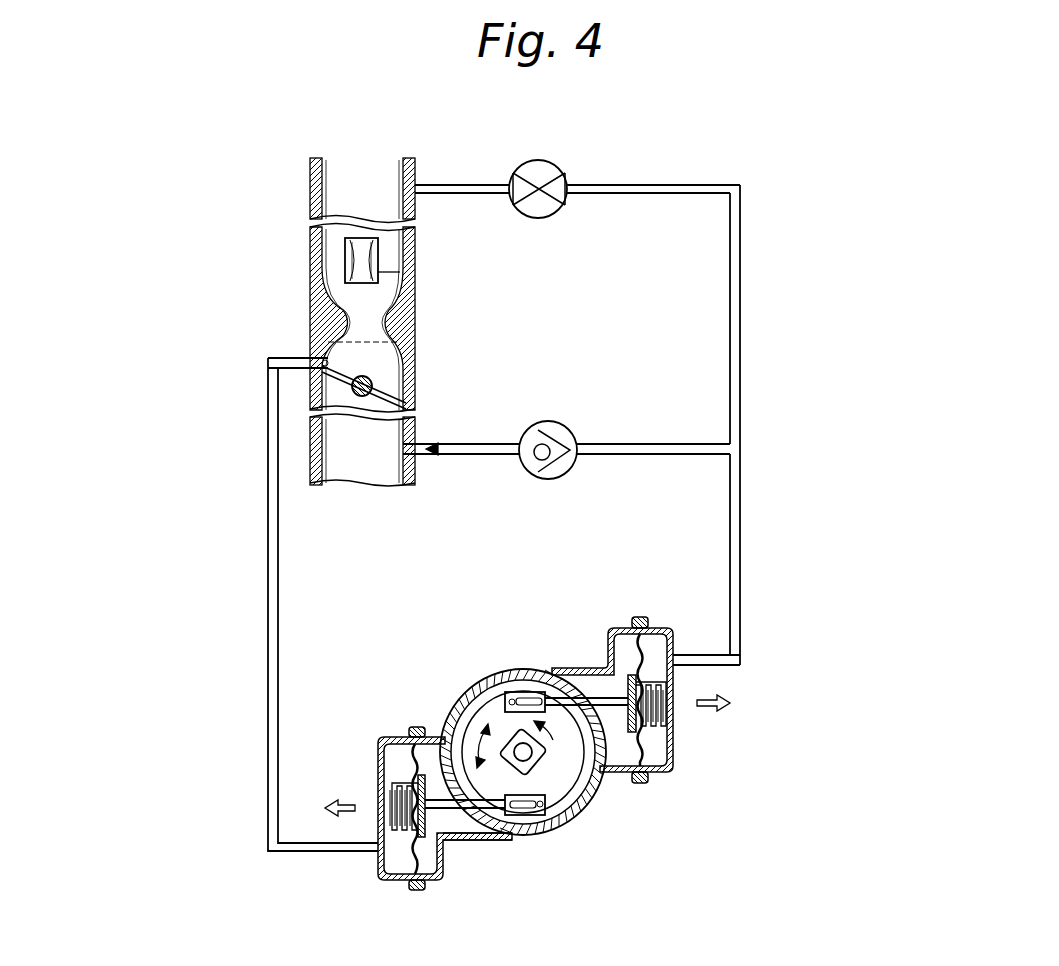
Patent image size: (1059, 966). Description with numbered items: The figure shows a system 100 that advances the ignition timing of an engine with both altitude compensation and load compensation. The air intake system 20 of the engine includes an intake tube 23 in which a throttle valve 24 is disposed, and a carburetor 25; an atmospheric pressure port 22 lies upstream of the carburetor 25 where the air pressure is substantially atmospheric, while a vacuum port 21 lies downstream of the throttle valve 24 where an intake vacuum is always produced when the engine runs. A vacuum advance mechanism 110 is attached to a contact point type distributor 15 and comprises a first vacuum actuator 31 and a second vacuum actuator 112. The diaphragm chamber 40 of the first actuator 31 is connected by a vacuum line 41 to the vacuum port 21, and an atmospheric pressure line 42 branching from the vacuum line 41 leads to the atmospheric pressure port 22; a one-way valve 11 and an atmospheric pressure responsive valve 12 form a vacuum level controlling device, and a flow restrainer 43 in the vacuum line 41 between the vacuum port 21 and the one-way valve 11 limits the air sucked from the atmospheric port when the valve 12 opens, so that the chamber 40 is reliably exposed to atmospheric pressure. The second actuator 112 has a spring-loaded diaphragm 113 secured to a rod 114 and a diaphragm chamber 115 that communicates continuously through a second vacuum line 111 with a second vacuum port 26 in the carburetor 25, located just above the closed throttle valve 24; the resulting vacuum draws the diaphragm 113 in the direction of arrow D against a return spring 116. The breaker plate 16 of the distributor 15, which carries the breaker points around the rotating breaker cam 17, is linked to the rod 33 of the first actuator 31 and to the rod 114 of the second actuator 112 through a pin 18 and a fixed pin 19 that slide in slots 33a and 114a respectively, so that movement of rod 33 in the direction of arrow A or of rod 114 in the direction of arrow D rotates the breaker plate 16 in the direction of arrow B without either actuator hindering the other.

The system 100 is at (762, 125).
The air intake system 20 is at (290, 331).
The atmospheric pressure port 22 is at (400, 188).
The carburetor 25 is at (387, 300).
The second vacuum port 26 is at (318, 357).
The throttle valve 24 is at (385, 382).
The vacuum port 21 is at (402, 447).
The intake tube 23 is at (310, 480).
The flow restrainer 43 is at (433, 457).
The atmospheric pressure responsive valve 12 is at (540, 164).
The atmospheric pressure line 42 is at (729, 241).
The one-way valve 11 is at (547, 422).
The vacuum line 41 is at (729, 508).
The vacuum advance mechanism 110 is at (358, 878).
The second vacuum line 111 is at (268, 712).
The return spring 116 is at (405, 780).
The rod 114 is at (460, 840).
The slot 114a is at (525, 840).
The second vacuum actuator 112 is at (410, 880).
The diaphragm 113 is at (435, 868).
The diaphragm chamber 115 is at (412, 742).
The distributor 15 is at (470, 667).
The breaker plate 16 is at (556, 815).
The breaker cam 17 is at (538, 763).
The pin 18 is at (513, 700).
The fixed pin 19 is at (525, 813).
The diaphragm chamber 40 is at (661, 645).
The rod 33 is at (580, 670).
The slot 33a is at (536, 702).
The vacuum actuator 31 is at (662, 775).